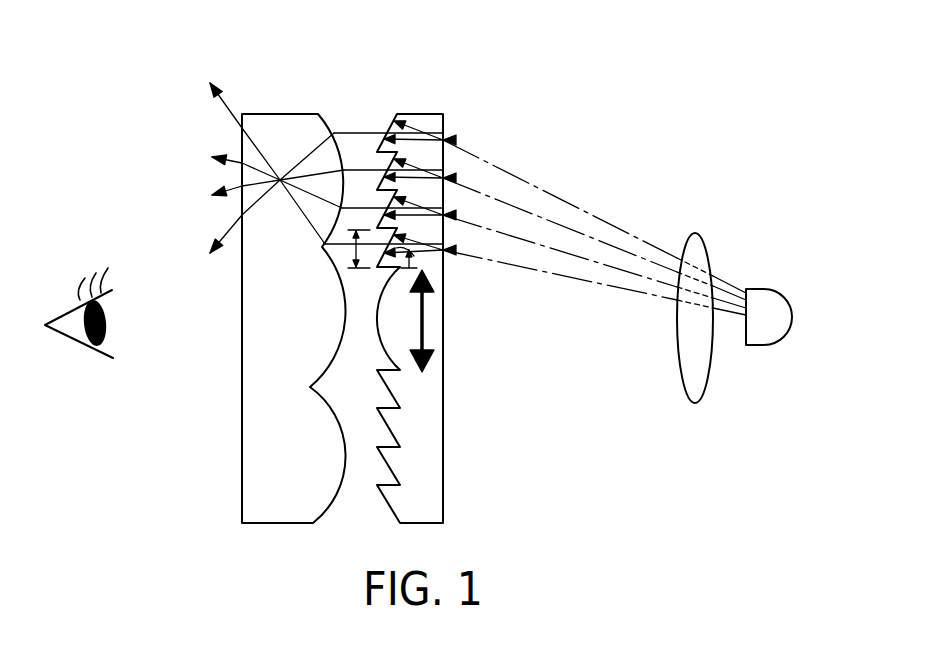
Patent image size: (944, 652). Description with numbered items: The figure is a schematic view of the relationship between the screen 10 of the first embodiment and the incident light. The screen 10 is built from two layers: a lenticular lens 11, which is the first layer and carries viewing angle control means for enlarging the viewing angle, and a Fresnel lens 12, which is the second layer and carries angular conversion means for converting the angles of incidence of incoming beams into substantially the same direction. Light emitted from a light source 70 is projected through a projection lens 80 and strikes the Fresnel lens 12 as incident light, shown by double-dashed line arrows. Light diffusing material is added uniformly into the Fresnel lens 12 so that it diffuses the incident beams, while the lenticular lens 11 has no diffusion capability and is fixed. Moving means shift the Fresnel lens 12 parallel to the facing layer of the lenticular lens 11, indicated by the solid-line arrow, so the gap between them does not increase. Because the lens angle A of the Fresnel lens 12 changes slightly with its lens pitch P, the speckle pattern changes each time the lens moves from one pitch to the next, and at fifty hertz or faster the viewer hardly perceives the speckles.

The screen 10 is at (257, 50).
The lenticular lens 11 is at (285, 112).
The Fresnel lens 12 is at (422, 112).
The light source 70 is at (771, 289).
The projection lens 80 is at (696, 233).
The lens pitch P is at (337, 268).
The lens angle A is at (417, 264).